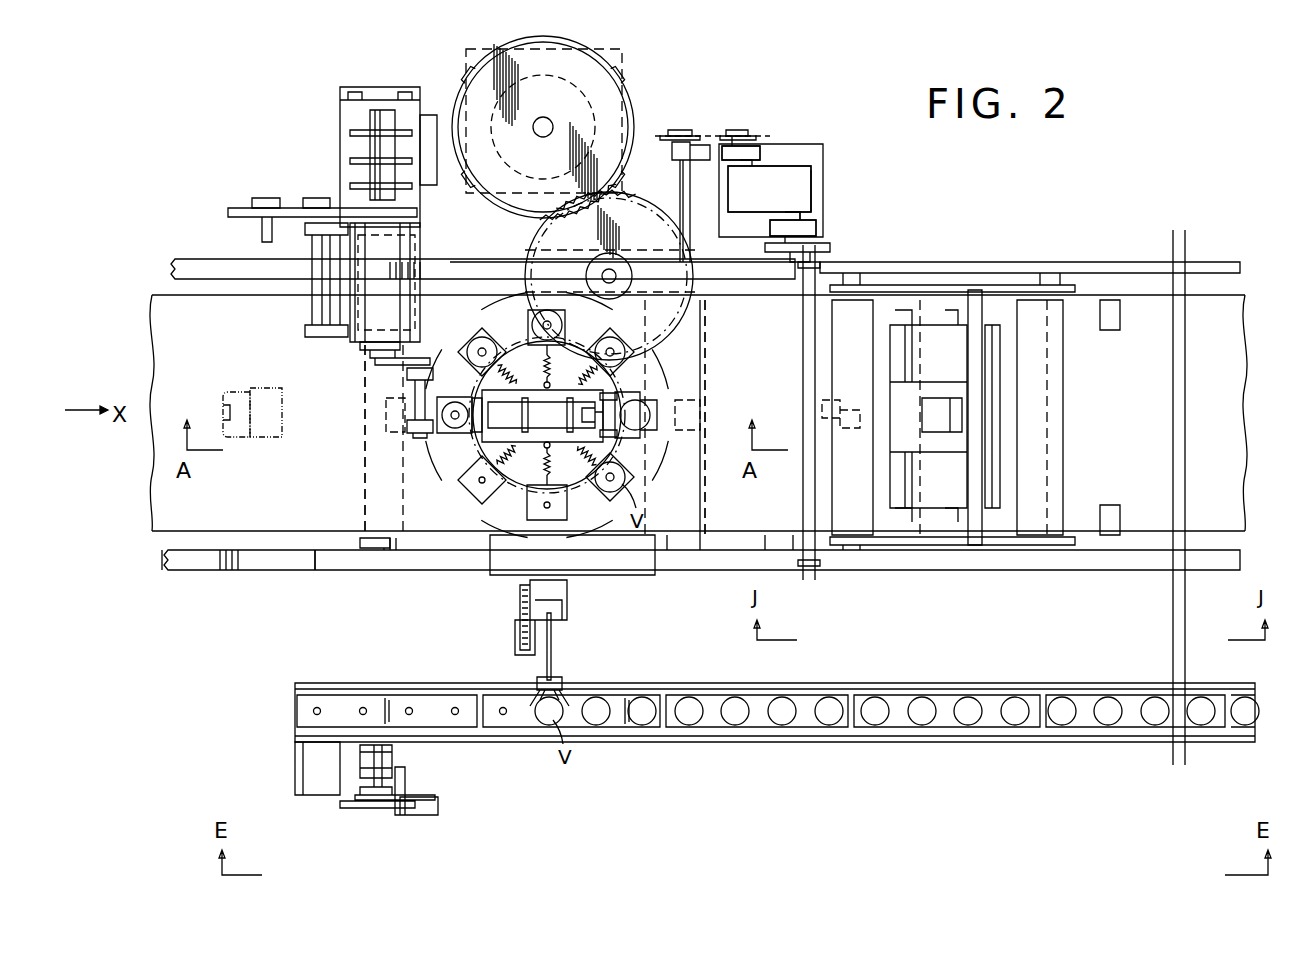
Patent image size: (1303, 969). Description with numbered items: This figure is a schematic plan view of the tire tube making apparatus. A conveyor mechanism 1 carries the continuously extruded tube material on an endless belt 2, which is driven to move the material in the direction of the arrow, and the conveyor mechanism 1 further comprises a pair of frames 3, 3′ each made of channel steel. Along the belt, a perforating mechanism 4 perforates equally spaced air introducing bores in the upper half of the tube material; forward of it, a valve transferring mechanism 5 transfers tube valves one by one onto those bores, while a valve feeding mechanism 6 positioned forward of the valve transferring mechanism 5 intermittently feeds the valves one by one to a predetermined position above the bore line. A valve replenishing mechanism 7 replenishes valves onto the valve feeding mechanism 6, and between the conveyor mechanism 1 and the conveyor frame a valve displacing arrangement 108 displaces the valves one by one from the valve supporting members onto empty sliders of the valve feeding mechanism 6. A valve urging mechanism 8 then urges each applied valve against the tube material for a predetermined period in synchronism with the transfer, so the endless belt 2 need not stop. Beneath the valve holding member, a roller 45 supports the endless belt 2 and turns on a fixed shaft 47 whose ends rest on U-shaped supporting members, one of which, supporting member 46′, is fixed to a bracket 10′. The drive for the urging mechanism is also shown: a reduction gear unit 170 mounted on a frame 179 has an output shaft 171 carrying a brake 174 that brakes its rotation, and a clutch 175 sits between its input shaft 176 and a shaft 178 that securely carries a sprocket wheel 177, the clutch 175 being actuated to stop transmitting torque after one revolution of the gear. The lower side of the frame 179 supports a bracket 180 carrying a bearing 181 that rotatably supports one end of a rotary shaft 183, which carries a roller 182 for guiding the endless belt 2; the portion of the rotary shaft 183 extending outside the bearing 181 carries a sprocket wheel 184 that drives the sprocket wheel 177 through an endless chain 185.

The conveyor mechanism 1 is at (186, 590).
The endless belt 2 is at (150, 512).
The frame 3 is at (246, 571).
The frame 3′ is at (187, 258).
The perforating mechanism 4 is at (246, 378).
The valve transferring mechanism 5 is at (354, 356).
The valve feeding mechanism 6 is at (460, 490).
The valve replenishing mechanism 7 is at (636, 682).
The valve urging mechanism 8 is at (946, 492).
The bracket 10′ is at (326, 571).
The roller 45 is at (365, 490).
The U-shaped supporting member 46′ is at (370, 552).
The fixed shaft 47 is at (392, 552).
The valve displacing arrangement 108 is at (568, 626).
The reduction gear unit 170 is at (806, 194).
The output shaft 171 is at (804, 216).
The brake 174 is at (808, 228).
The clutch 175 is at (760, 148).
The input shaft 176 is at (742, 170).
The sprocket wheel 177 is at (730, 126).
The shaft 178 is at (738, 136).
The frame 179 is at (747, 236).
The bracket 180 is at (690, 160).
The bearing 181 is at (658, 142).
The roller 182 is at (705, 518).
The rotary shaft 183 is at (680, 192).
The sprocket wheel 184 is at (668, 130).
The endless chain 185 is at (708, 136).